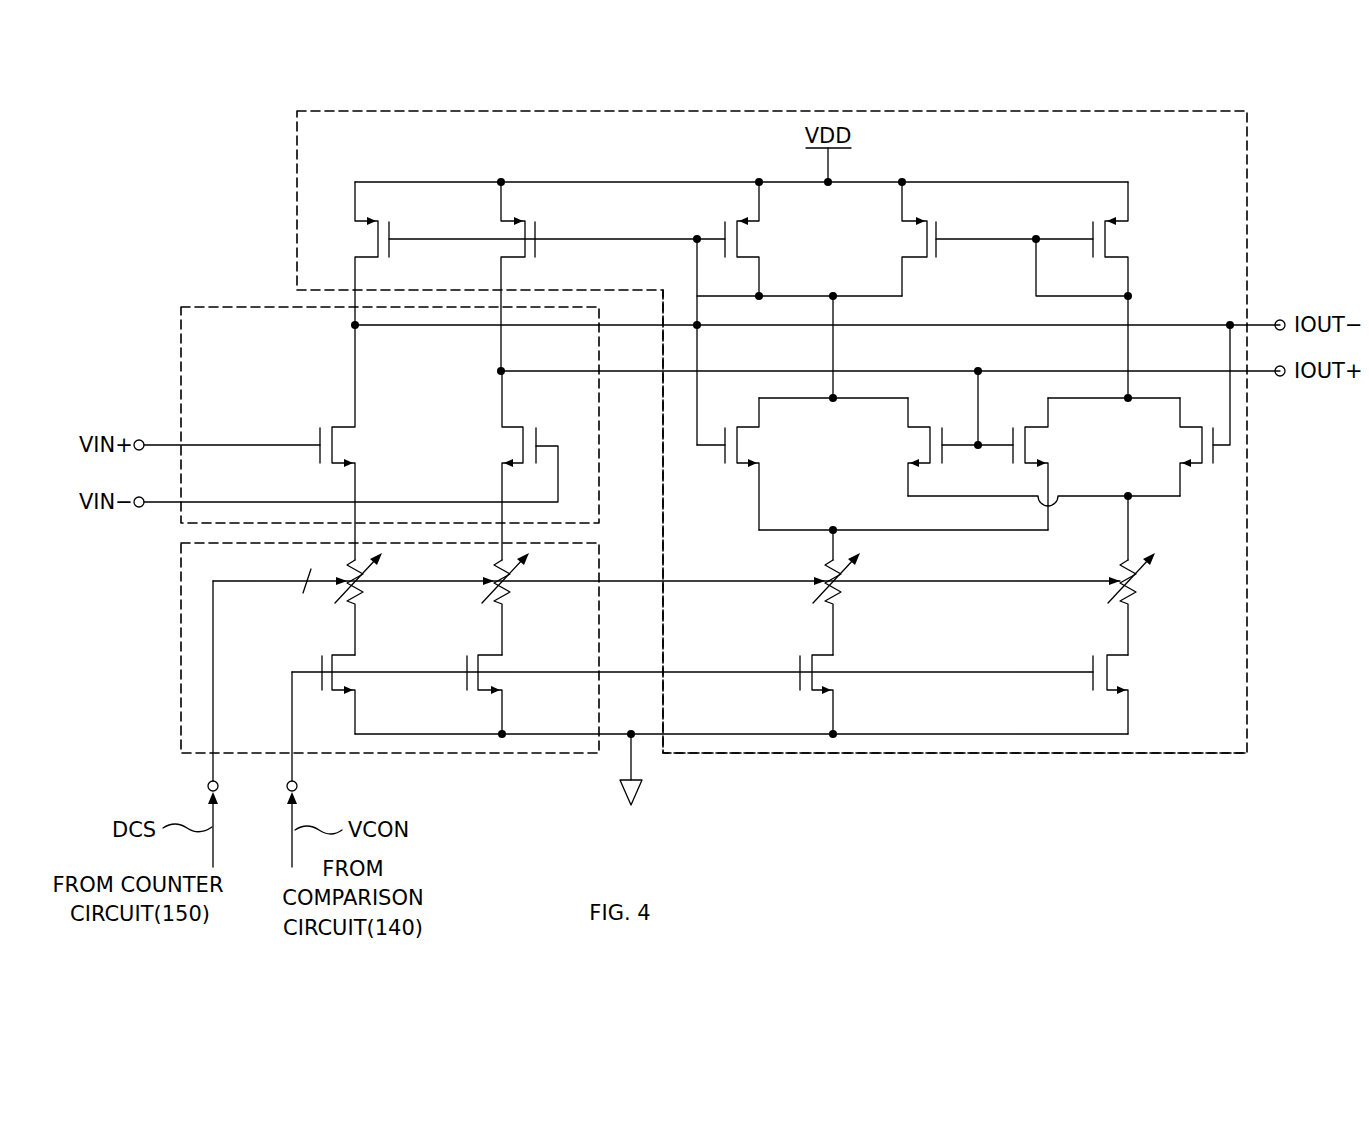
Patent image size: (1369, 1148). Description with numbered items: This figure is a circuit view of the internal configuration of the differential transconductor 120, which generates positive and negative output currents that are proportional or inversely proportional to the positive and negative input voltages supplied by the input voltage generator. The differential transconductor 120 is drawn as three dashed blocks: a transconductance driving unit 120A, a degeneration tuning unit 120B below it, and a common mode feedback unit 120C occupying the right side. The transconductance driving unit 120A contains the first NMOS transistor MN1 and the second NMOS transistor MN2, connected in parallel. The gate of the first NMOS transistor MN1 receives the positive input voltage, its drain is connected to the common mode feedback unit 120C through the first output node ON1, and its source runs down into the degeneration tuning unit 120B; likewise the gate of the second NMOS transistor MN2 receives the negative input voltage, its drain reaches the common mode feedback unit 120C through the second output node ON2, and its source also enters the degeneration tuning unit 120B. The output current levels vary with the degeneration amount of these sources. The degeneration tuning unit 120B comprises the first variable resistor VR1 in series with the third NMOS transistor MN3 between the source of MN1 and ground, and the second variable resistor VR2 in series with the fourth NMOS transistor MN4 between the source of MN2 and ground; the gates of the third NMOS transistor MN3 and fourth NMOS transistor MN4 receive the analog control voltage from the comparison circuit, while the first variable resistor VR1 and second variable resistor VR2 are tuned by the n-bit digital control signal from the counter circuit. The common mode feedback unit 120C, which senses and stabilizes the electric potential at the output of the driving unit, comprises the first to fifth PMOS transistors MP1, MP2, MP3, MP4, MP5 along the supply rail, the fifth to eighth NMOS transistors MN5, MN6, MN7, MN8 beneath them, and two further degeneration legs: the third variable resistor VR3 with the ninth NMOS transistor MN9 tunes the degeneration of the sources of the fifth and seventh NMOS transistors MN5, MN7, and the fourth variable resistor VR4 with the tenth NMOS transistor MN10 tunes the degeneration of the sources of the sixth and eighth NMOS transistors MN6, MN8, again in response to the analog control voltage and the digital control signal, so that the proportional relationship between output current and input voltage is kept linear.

The differential transconductor 120 is at (627, 70).
The transconductance driving unit 120A is at (178, 339).
The degeneration tuning unit 120B is at (455, 753).
The common mode feedback unit 120C is at (963, 753).
The first PMOS transistor MP1 is at (357, 253).
The second PMOS transistor MP2 is at (526, 276).
The third PMOS transistor MP3 is at (757, 239).
The fourth PMOS transistor MP4 is at (904, 239).
The fifth PMOS transistor MP5 is at (1124, 290).
The first NMOS transistor MN1 is at (357, 442).
The second NMOS transistor MN2 is at (501, 465).
The third NMOS transistor MN3 is at (366, 694).
The fourth NMOS transistor MN4 is at (511, 694).
The fifth NMOS transistor MN5 is at (745, 464).
The sixth NMOS transistor MN6 is at (943, 447).
The seventh NMOS transistor MN7 is at (1048, 464).
The eighth NMOS transistor MN8 is at (1179, 447).
The ninth NMOS transistor MN9 is at (845, 694).
The tenth NMOS transistor MN10 is at (1133, 694).
The first variable resistor VR1 is at (374, 604).
The second variable resistor VR2 is at (520, 604).
The third variable resistor VR3 is at (851, 604).
The fourth variable resistor VR4 is at (1147, 604).
The first output node ON1 is at (353, 326).
The second output node ON2 is at (500, 372).